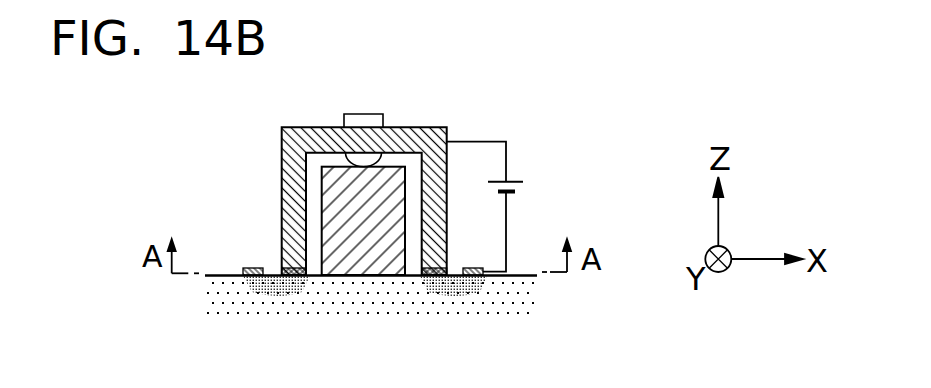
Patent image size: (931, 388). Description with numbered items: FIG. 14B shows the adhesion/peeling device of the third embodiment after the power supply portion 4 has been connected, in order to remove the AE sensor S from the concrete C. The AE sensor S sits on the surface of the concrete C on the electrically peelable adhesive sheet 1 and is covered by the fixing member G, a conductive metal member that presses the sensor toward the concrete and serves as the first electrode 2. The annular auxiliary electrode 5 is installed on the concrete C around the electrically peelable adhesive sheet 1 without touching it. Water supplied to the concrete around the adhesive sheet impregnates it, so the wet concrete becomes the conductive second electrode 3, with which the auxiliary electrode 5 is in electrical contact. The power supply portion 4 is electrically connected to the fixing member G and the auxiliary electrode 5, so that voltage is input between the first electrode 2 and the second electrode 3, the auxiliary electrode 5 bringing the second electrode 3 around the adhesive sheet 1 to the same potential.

The fixing member G is at (412, 174).
The first electrode 2 is at (416, 122).
The AE sensor S is at (385, 198).
The electrically peelable adhesive sheet 1 is at (445, 270).
The auxiliary electrode 5 is at (473, 270).
The power supply portion 4 is at (516, 182).
The concrete C is at (519, 278).
The second electrode 3 is at (453, 286).